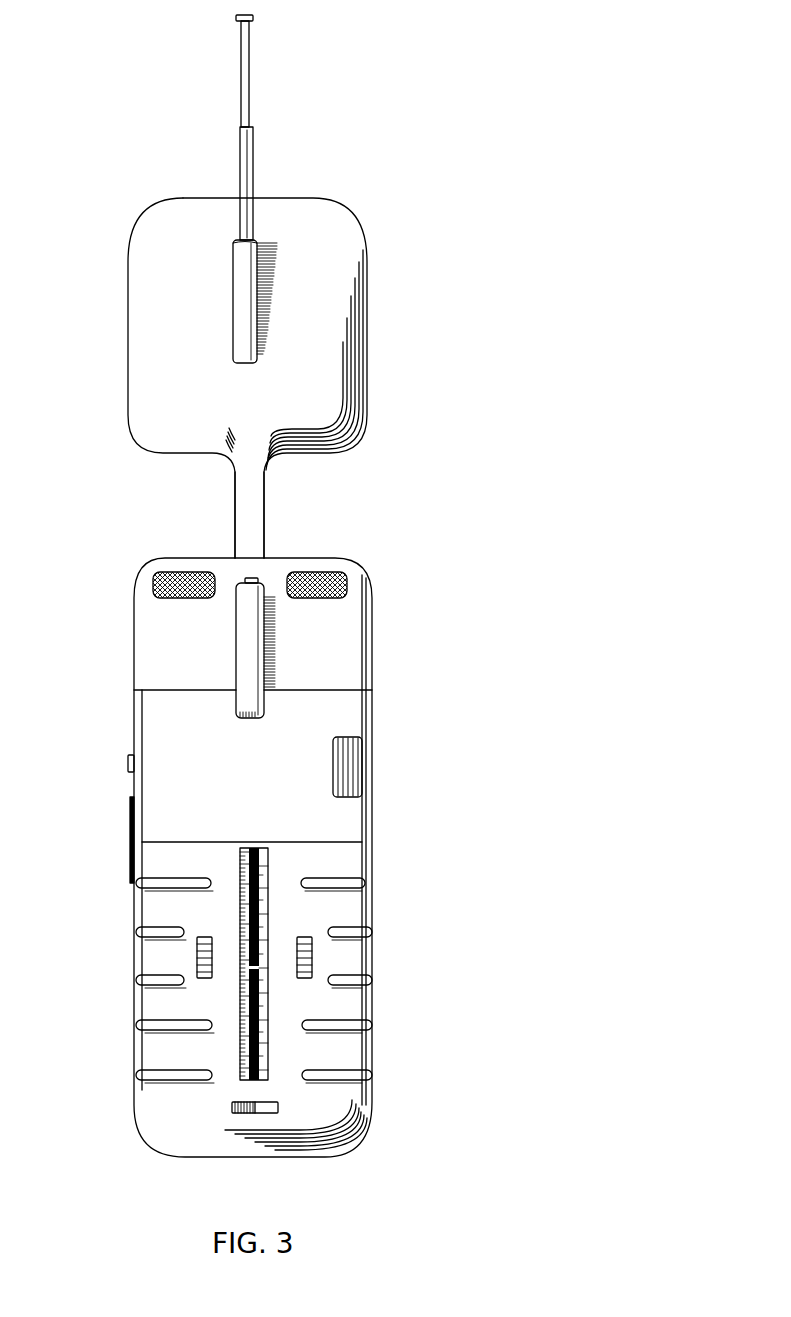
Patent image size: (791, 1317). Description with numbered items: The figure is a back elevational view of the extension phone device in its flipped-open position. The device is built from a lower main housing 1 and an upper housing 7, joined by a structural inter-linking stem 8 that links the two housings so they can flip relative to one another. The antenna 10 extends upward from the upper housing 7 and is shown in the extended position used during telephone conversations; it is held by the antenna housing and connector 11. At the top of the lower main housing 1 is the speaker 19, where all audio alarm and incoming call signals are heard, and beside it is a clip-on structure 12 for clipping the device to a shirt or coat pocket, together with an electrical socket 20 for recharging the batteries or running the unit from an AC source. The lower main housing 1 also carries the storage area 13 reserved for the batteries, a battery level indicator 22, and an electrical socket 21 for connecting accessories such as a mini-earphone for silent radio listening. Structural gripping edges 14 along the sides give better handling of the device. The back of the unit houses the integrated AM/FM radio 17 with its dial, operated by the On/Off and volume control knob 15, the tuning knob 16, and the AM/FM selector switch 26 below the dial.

The lower main housing 1 is at (216, 857).
The upper housing 7 is at (284, 378).
The structural inter-linking stem 8 is at (285, 515).
The antenna 10 is at (283, 127).
The antenna housing and connector 11 is at (343, 301).
The clip-on structure 12 is at (343, 650).
The storage area for batteries 13 is at (376, 767).
The structural gripping edges 14 is at (343, 964).
The On/Off and volume control knob 15 is at (129, 1003).
The tuning knob 16 is at (373, 988).
The AM/FM radio 17 is at (343, 1109).
The speaker 19 is at (260, 565).
The electrical socket 20 is at (201, 544).
The electrical socket 21 is at (100, 782).
The battery level indicator 22 is at (96, 853).
The AM/FM selector switch 26 is at (202, 1154).